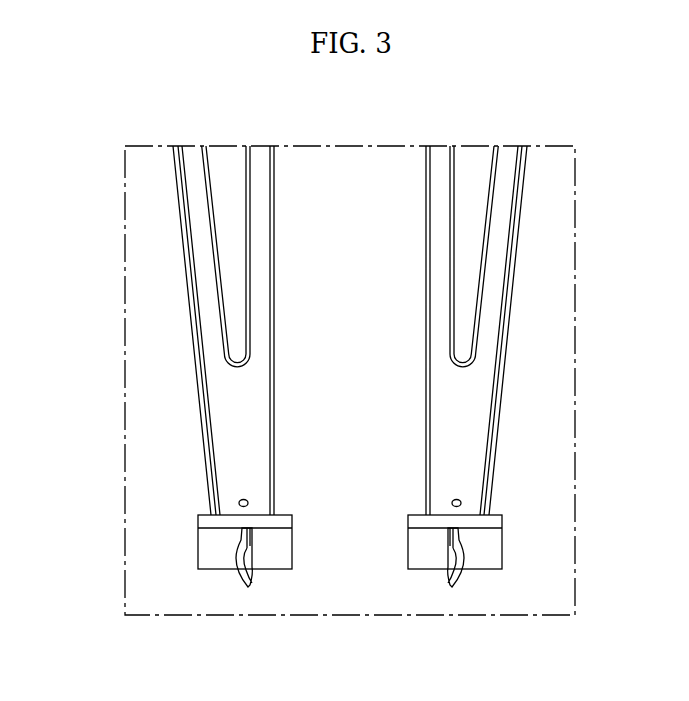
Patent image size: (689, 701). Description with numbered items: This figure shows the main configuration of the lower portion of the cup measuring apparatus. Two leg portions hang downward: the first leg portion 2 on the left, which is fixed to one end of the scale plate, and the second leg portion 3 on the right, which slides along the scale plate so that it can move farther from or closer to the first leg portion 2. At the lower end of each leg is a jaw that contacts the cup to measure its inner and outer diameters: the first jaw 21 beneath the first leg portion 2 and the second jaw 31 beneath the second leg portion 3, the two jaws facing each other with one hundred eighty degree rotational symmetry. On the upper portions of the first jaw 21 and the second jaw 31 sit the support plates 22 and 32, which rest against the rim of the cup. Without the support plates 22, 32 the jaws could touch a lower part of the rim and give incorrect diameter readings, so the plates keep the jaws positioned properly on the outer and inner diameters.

The first leg portion 2 is at (205, 302).
The support plate 22 is at (202, 516).
The first jaw 21 is at (248, 590).
The second leg portion 3 is at (492, 303).
The support plate 32 is at (496, 519).
The second jaw 31 is at (452, 590).